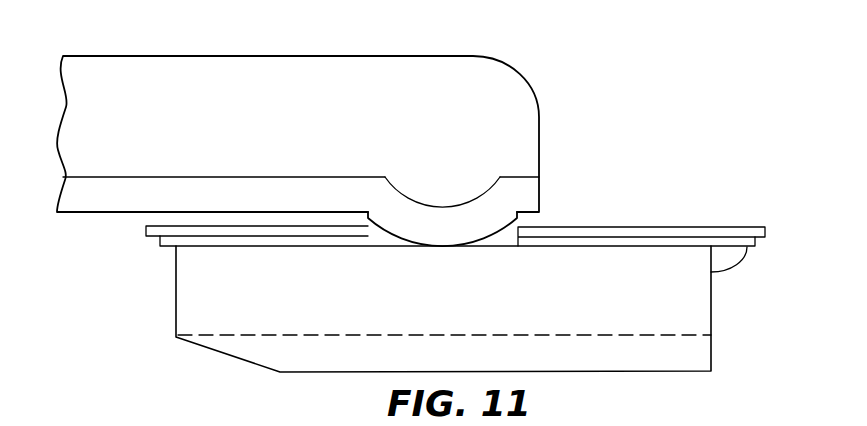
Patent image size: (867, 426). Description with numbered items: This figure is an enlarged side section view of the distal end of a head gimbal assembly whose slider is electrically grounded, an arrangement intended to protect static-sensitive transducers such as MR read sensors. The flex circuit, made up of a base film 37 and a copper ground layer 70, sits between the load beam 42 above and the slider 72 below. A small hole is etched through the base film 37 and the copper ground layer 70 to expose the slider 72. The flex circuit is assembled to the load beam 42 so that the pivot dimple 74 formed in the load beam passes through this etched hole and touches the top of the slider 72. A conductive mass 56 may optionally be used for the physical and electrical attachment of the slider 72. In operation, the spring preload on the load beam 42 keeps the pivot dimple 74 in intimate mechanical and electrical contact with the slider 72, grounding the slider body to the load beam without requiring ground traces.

The load beam 42 is at (219, 70).
The pivot dimple 74 is at (452, 216).
The flex circuit base film 37 is at (668, 227).
The copper ground layer 70 is at (755, 243).
The slider 72 is at (188, 289).
The conductive mass 56 is at (733, 267).